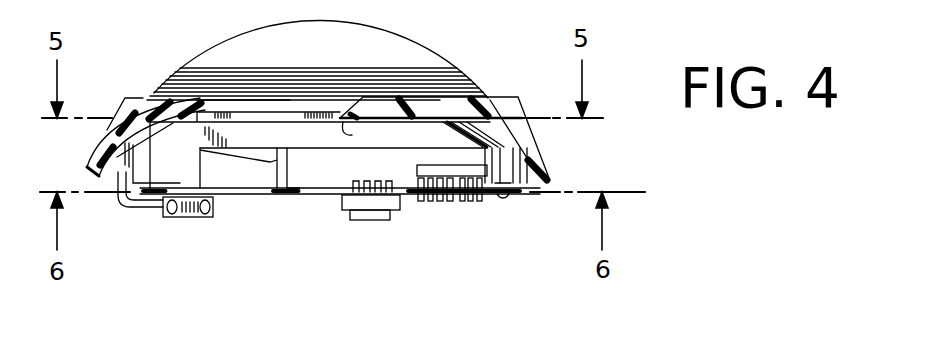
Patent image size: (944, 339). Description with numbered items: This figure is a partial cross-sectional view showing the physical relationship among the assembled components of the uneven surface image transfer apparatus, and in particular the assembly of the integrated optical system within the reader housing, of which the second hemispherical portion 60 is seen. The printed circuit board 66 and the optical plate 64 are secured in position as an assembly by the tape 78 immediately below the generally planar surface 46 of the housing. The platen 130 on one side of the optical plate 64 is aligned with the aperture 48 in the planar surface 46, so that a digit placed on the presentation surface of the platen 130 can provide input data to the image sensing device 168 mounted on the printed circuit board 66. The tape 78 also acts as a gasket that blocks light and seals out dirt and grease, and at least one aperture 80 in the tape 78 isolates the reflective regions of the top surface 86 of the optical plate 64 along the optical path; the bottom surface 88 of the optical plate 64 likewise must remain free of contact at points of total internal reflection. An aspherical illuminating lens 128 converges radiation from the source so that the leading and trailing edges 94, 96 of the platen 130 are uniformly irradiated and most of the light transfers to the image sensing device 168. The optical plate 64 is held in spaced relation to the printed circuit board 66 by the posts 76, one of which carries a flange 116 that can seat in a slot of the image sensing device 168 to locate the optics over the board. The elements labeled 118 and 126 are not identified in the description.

The planar surface 46 is at (457, 88).
The aperture 48 is at (263, 107).
The second hemispherical portion 60 is at (133, 110).
The optical plate 64 is at (402, 137).
The printed circuit board 66 is at (260, 197).
The posts 76 is at (187, 182).
The tape 78 is at (428, 115).
The aperture 80 is at (373, 115).
The top surface 86 is at (222, 107).
The bottom surface 88 is at (328, 200).
The leading edge 94 is at (182, 113).
The trailing edge 96 is at (343, 136).
The flange 116 is at (487, 197).
The connector 118 is at (193, 213).
The support 126 is at (278, 197).
The aspherical illuminating lens 128 is at (200, 150).
The platen 130 is at (298, 124).
The image sensing device 168 is at (427, 164).